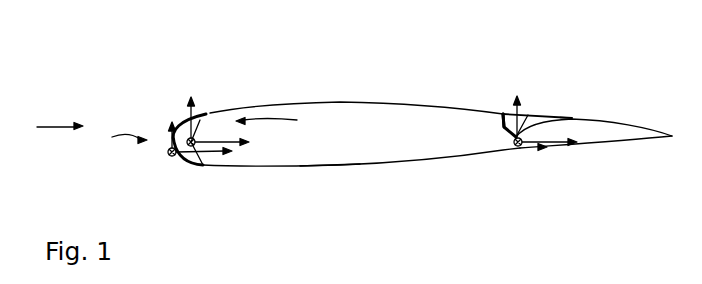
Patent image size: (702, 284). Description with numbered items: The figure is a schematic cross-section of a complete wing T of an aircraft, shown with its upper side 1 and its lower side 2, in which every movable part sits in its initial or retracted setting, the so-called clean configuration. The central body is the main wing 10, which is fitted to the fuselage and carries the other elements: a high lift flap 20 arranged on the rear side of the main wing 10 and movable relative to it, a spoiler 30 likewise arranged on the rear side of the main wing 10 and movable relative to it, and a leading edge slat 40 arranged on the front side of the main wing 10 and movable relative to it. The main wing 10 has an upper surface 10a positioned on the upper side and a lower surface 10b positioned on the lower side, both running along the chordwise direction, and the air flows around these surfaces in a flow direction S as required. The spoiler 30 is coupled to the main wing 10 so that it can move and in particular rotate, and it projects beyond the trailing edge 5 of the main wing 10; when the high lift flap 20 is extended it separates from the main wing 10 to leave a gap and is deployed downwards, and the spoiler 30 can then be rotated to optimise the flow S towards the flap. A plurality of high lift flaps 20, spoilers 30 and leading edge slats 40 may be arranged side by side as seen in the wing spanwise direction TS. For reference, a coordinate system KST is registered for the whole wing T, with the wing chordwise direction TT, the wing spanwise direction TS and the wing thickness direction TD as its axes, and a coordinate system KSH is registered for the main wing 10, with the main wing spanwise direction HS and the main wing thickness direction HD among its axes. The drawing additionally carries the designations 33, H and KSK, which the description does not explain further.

The upper side 1 is at (402, 159).
The lower side 2 is at (328, 200).
The trailing edge 5 is at (499, 104).
The main wing 10 is at (326, 152).
The upper surface 10a is at (304, 93).
The lower surface 10b is at (380, 165).
The high lift flap 20 is at (593, 143).
The spoiler 30 is at (554, 98).
The spoiler trailing edge 33 is at (573, 123).
The leading edge slat 40 is at (177, 167).
The wing T is at (428, 77).
The flow direction S is at (60, 138).
The coordinate system for the whole wing KST is at (117, 142).
The wing spanwise direction TS is at (159, 158).
The main wing spanwise direction HS is at (195, 137).
The wing thickness direction TD is at (160, 127).
The main wing thickness direction HD is at (194, 110).
The main wing chord direction H is at (229, 139).
The wing chordwise direction TT is at (262, 150).
The coordinate system for the main wing KSH is at (288, 128).
The flap chord KSK is at (542, 155).